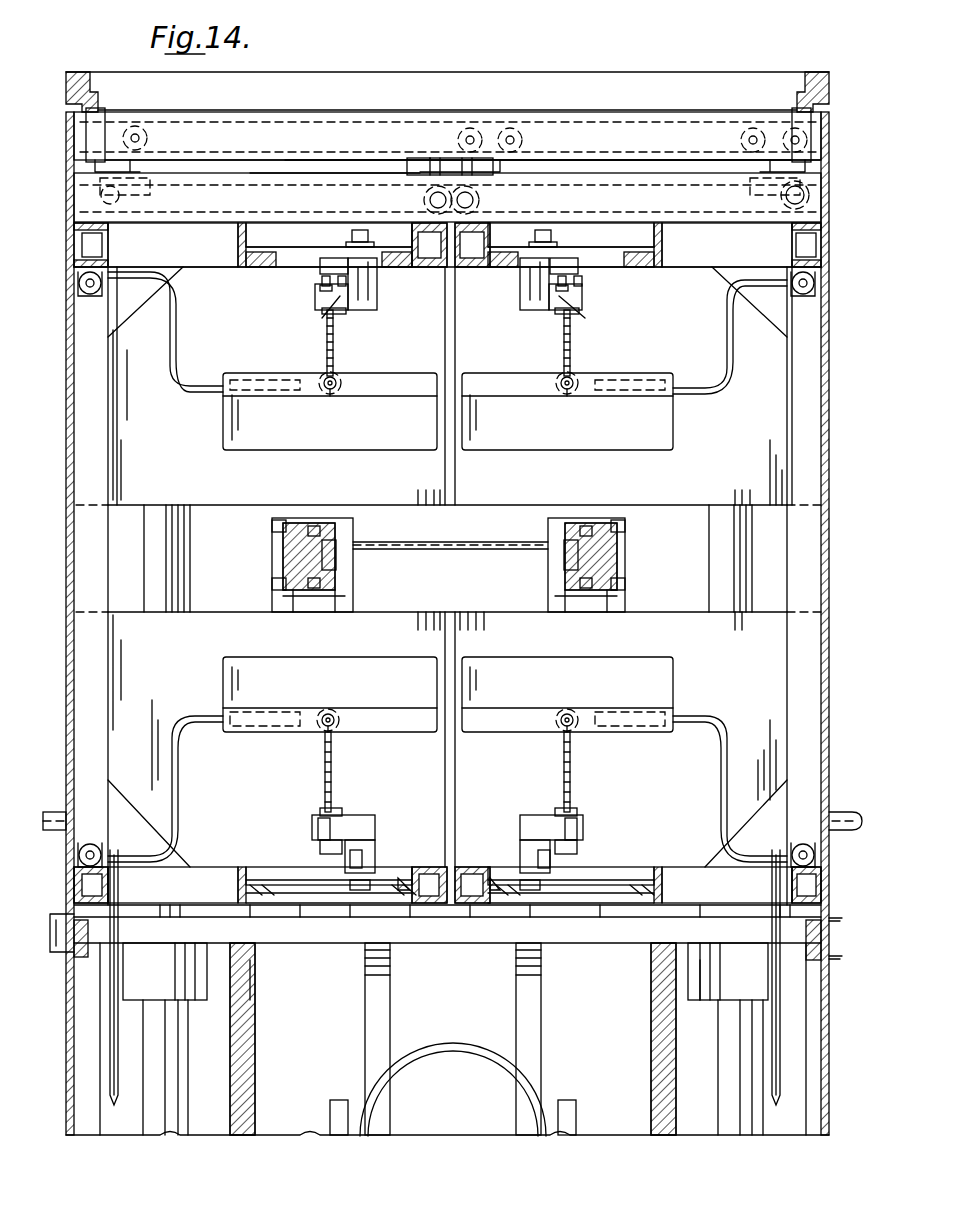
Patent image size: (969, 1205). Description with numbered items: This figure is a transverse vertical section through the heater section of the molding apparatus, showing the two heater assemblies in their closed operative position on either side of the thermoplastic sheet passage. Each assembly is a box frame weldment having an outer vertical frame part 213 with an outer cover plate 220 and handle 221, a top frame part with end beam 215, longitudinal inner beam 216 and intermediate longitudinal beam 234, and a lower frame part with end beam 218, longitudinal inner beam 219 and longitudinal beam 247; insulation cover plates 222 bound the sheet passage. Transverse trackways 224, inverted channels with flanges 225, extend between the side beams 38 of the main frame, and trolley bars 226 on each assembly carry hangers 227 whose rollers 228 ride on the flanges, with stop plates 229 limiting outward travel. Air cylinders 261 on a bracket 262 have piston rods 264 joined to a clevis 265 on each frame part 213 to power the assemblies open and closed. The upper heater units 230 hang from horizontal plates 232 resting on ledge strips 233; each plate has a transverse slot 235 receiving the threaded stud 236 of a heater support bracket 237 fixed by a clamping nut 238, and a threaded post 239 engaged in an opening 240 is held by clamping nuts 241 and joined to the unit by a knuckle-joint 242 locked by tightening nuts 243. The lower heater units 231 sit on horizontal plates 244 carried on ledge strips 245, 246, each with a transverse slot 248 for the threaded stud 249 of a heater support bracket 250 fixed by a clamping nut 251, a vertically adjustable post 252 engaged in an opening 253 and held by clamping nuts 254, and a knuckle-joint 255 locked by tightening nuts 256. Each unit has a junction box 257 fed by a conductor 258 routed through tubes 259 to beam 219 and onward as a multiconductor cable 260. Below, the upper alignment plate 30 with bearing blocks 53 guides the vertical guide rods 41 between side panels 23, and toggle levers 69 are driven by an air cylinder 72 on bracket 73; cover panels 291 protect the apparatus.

The side beam 38 is at (84, 72).
The transverse trackway 224 is at (288, 130).
The trolley bar 226 is at (236, 172).
The inwardly extending flange 225 is at (320, 157).
The air cylinder 261 is at (293, 172).
The roller 228 is at (150, 140).
The bracket 262 is at (452, 162).
The hanger 227 is at (95, 170).
The piston rod 264 is at (150, 190).
The stop plate 229 is at (425, 190).
The clevis 265 is at (74, 224).
The intermediate longitudinal beam 234 is at (210, 270).
The transverse slot 235 is at (280, 256).
The longitudinal inner beam 216 is at (424, 270).
The clamping nut 238 is at (368, 236).
The outer cover plate 220 is at (70, 550).
The end beam 215 is at (210, 268).
The conductor 258 is at (176, 347).
The tube 259 is at (90, 296).
The handle 221 is at (43, 812).
The outer vertical frame part 213 is at (74, 414).
The cover panel 291 is at (66, 1037).
The upper heater unit 230 is at (334, 446).
The junction box 257 is at (260, 376).
The threaded stud 236 is at (448, 284).
The threaded post 239 is at (336, 342).
The heater support bracket 237 is at (478, 319).
The opening 240 is at (310, 302).
The clamping nut 241 is at (322, 278).
The horizontal plate 232 is at (272, 250).
The ledge strip 233 is at (243, 272).
The knuckle-joint 242 is at (345, 384).
The tightening nut 243 is at (336, 393).
The forward insulation cover plate 222 is at (231, 505).
The lower heater unit 231 is at (328, 660).
The tightening nut 256 is at (333, 712).
The knuckle-joint 255 is at (335, 731).
The vertically adjustable post 252 is at (325, 778).
The heater support bracket 250 is at (365, 815).
The opening 253 is at (318, 825).
The clamping nut 254 is at (340, 808).
The longitudinal inner beam 219 is at (362, 862).
The longitudinal beam 247 is at (238, 894).
The ledge strip 245 is at (253, 882).
The end beam 218 is at (200, 872).
The transverse slot 248 is at (264, 882).
The horizontal plate 244 is at (290, 878).
The threaded stud 249 is at (450, 893).
The ledge strip 246 is at (402, 886).
The clamping nut 251 is at (361, 891).
The upper alignment plate 30 is at (448, 942).
The multiconductor cable 260 is at (110, 1074).
The bearing block 53 is at (138, 1000).
The vertical guide rod 41 is at (180, 1092).
The side panel 23 is at (230, 1032).
The toggle lever 69 is at (365, 1037).
The bracket 73 is at (337, 1100).
The air cylinder 72 is at (451, 1054).